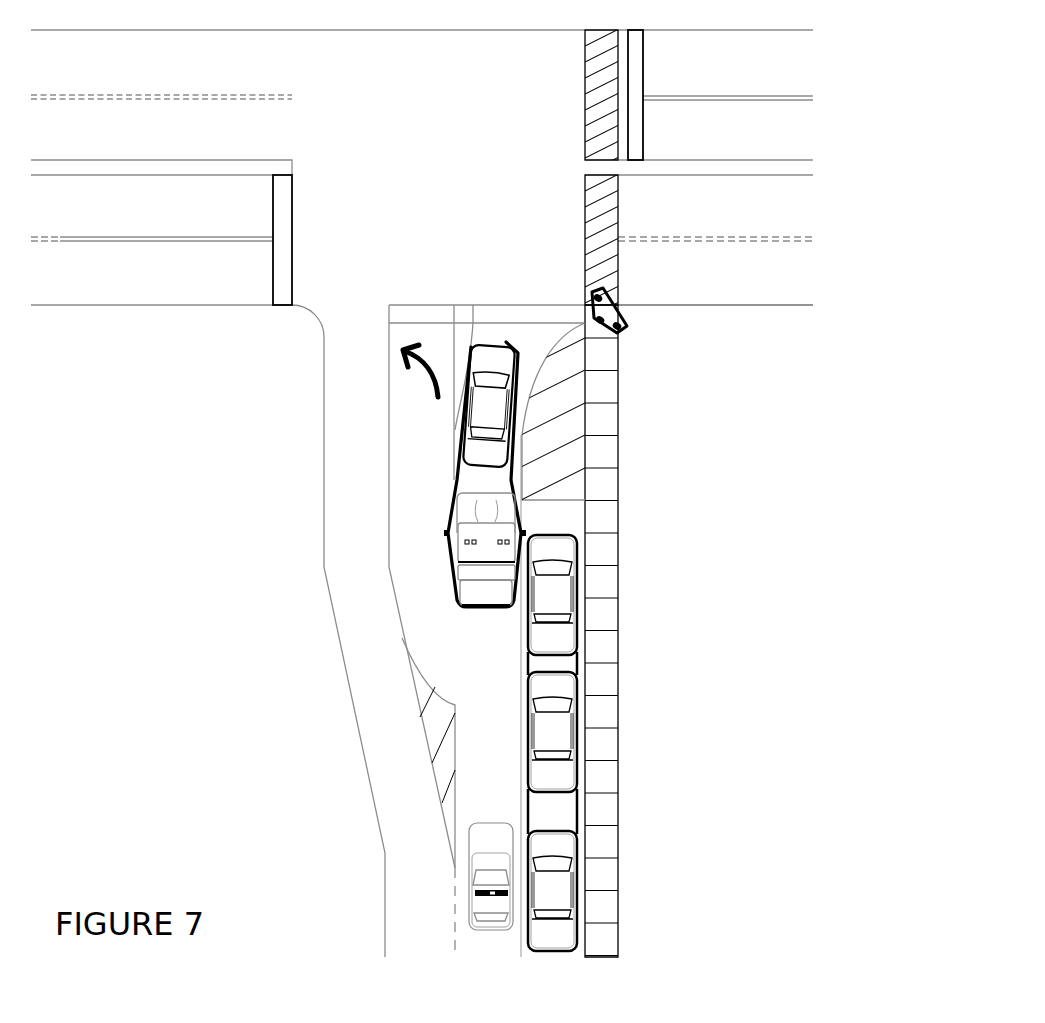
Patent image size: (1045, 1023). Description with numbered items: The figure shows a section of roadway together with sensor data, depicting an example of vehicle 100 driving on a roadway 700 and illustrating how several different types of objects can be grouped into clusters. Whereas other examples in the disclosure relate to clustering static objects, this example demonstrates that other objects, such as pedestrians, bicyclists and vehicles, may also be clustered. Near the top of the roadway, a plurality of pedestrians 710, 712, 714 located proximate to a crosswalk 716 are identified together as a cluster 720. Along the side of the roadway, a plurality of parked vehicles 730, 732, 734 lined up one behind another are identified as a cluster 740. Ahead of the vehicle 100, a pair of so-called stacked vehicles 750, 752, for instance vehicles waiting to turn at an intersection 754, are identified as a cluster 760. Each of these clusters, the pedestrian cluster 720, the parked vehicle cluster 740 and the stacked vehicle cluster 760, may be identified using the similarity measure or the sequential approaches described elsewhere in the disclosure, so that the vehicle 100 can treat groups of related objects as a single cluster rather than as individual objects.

The vehicle 100 is at (472, 893).
The roadway 700 is at (422, 493).
The pedestrian 710 is at (618, 302).
The pedestrian 712 is at (625, 341).
The pedestrian 714 is at (603, 332).
The crosswalk 716 is at (585, 236).
The cluster 720 is at (590, 303).
The parked vehicle 730 is at (578, 620).
The parked vehicle 732 is at (577, 765).
The parked vehicle 734 is at (577, 927).
The cluster 740 is at (577, 665).
The stacked vehicle 750 is at (455, 470).
The stacked vehicle 752 is at (447, 538).
The intersection 754 is at (601, 244).
The cluster 760 is at (452, 505).